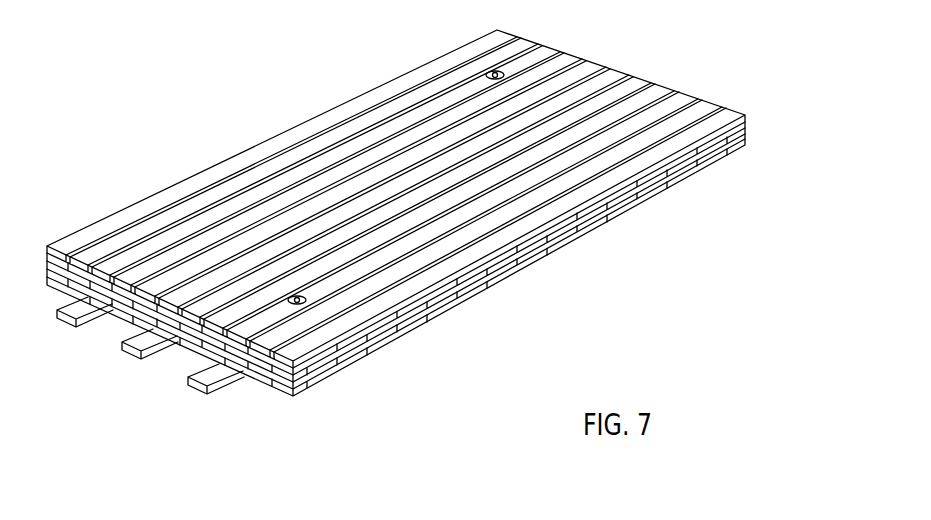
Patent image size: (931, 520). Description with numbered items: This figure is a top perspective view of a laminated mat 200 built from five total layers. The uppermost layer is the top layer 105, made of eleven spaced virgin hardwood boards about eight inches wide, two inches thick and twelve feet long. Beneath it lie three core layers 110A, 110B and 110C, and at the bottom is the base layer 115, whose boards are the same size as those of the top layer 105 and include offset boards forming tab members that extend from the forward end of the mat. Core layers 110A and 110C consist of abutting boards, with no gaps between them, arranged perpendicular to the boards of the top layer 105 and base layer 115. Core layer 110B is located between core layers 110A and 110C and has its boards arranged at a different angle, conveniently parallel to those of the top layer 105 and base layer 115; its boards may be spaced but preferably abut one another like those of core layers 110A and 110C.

The laminated mat 200 is at (223, 111).
The top layer 105 is at (428, 105).
The core layer 110A is at (300, 366).
The core layer 110B is at (343, 353).
The core layer 110C is at (379, 338).
The base layer 115 is at (450, 313).